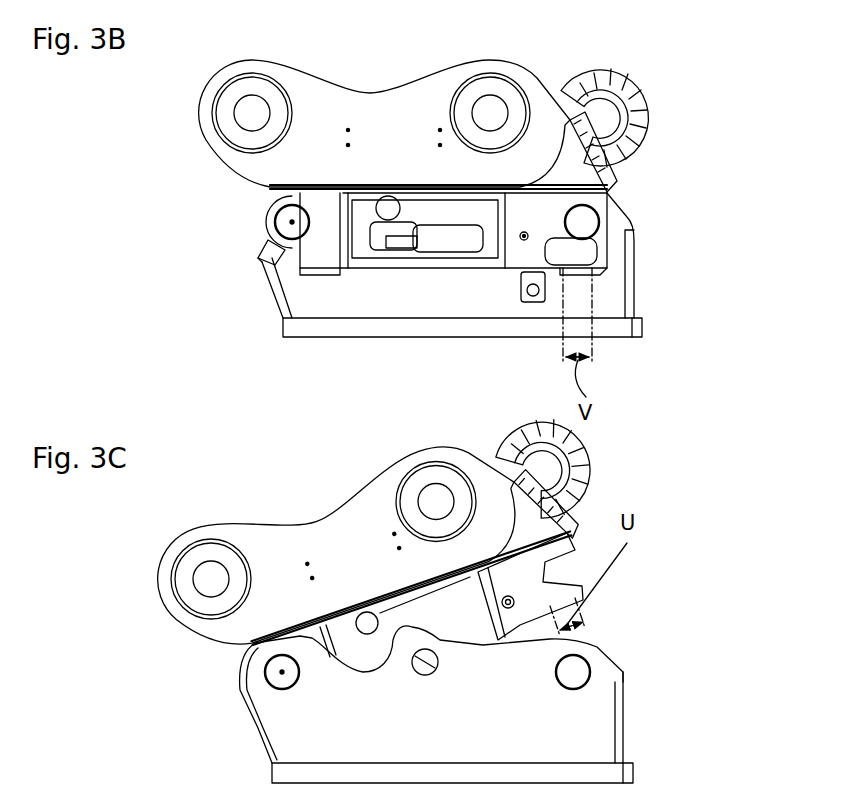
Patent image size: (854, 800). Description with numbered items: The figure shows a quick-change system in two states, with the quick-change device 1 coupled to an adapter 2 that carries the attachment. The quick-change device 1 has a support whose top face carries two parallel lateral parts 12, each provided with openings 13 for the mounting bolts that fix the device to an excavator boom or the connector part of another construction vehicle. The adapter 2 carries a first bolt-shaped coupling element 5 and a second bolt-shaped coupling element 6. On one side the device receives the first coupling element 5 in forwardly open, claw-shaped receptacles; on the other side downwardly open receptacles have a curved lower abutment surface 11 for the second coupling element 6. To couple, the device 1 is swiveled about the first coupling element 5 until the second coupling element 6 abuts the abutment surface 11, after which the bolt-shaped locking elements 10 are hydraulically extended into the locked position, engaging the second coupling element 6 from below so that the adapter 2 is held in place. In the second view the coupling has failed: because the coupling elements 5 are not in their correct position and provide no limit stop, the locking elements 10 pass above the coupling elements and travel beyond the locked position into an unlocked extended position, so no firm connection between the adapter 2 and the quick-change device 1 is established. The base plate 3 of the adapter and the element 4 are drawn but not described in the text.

In FIG. 3B, the quick-change device 1 is at (424, 96).
In FIG. 3C, the quick-change device 1 is at (377, 526).
In FIG. 3B, the adapter 2 is at (511, 272).
In FIG. 3C, the adapter 2 is at (494, 658).
In FIG. 3B, the base plate 3 is at (385, 322).
In FIG. 3C, the base plate 3 is at (460, 772).
In FIG. 3C, the locking element 4 is at (466, 676).
In FIG. 3B, the first bolt-shaped coupling element 5 is at (293, 232).
In FIG. 3C, the first bolt-shaped coupling element 5 is at (282, 675).
In FIG. 3B, the second bolt-shaped coupling element 6 is at (580, 222).
In FIG. 3C, the second bolt-shaped coupling element 6 is at (573, 673).
In FIG. 3B, the locking element 10 is at (578, 250).
In FIG. 3B, the abutment surface 11 is at (580, 205).
In FIG. 3B, the lateral part 12 is at (388, 167).
In FIG. 3C, the lateral part 12 is at (328, 553).
In FIG. 3B, the opening 13 is at (254, 113).
In FIG. 3C, the opening 13 is at (211, 579).